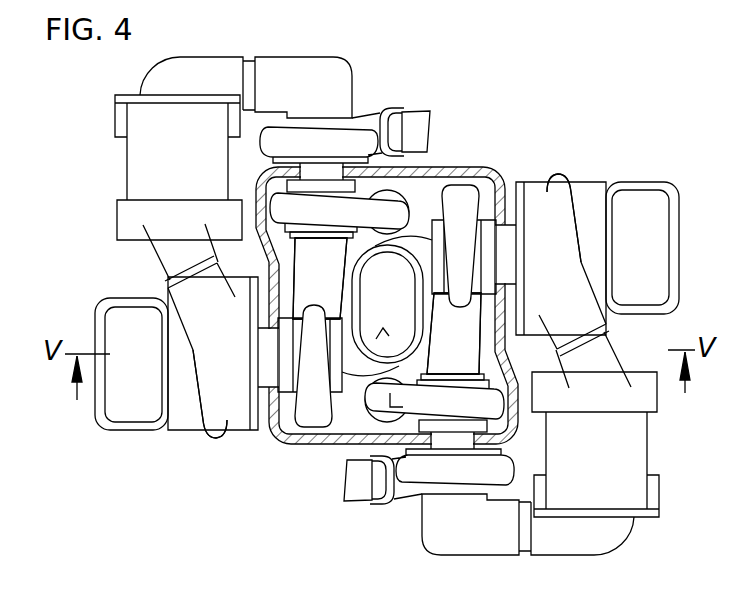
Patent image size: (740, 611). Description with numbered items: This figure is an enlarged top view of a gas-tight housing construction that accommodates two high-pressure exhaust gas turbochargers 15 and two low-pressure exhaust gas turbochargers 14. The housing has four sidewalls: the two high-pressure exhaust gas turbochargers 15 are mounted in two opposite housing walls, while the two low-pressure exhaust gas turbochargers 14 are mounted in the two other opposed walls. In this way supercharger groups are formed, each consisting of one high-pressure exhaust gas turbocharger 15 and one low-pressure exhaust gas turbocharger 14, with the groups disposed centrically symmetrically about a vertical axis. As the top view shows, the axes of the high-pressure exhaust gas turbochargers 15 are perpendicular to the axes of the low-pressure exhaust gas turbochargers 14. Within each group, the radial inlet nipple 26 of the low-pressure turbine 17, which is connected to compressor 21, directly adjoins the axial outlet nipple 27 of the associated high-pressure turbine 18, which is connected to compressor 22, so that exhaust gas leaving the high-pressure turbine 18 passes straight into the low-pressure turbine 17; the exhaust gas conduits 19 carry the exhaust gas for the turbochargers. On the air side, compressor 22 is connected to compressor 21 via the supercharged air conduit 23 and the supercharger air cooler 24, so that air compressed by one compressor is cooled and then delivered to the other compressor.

The low-pressure exhaust gas turbocharger 14 is at (540, 188).
The high-pressure exhaust gas turbocharger 15 is at (278, 207).
The low-pressure turbine 17 is at (326, 417).
The high-pressure turbine 18 is at (386, 219).
The exhaust gas conduit 19 is at (334, 293).
The compressor 21 is at (237, 373).
The compressor 22 is at (322, 155).
The supercharged air conduit 23 is at (326, 93).
The supercharger air cooler 24 is at (196, 155).
The radial inlet nipple 26 is at (443, 300).
The axial outlet nipple 27 is at (336, 263).